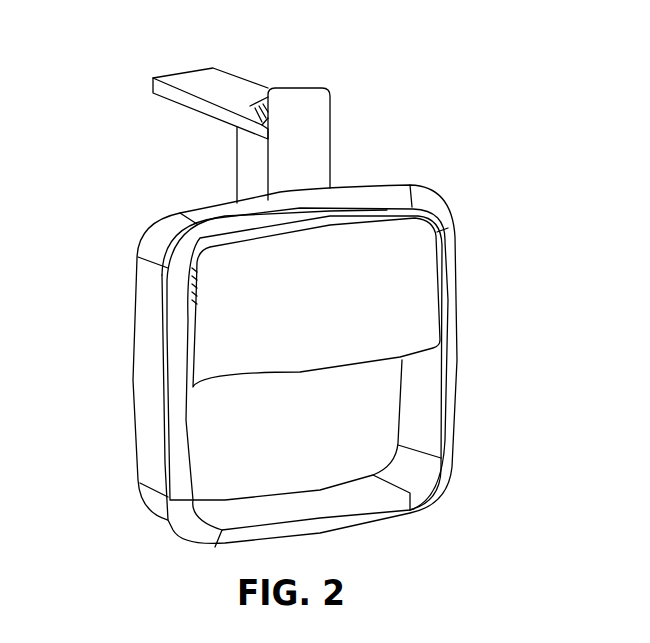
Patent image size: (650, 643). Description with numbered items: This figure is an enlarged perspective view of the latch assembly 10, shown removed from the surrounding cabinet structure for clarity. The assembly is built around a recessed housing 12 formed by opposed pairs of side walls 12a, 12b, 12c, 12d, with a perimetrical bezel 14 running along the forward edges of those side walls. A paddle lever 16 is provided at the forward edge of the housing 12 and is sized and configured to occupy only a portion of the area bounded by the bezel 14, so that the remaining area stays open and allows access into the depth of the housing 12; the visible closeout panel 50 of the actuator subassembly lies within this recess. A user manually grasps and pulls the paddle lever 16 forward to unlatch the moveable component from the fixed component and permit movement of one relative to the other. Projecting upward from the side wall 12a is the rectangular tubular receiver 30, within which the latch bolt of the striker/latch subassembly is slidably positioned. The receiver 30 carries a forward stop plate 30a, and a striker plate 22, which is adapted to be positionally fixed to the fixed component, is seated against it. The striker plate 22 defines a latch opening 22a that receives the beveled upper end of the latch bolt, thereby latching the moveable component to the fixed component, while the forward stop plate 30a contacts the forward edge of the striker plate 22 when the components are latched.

The latch assembly 10 is at (287, 290).
The recessed housing 12 is at (287, 362).
The side wall 12a is at (203, 210).
The side wall 12b is at (146, 438).
The side wall 12c is at (347, 498).
The side wall 12d is at (428, 397).
The perimetrical bezel 14 is at (452, 270).
The paddle lever 16 is at (335, 307).
The striker plate 22 is at (224, 76).
The latch opening 22a is at (258, 112).
The rectangular tubular receiver 30 is at (340, 145).
The forward stop plate 30a is at (313, 127).
The closeout panel 50 is at (262, 468).